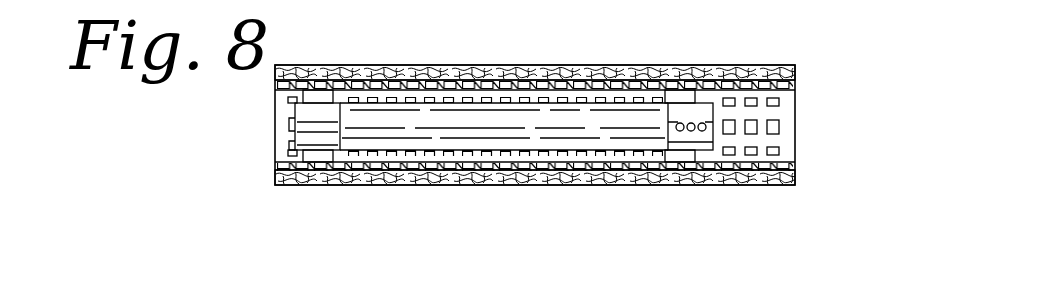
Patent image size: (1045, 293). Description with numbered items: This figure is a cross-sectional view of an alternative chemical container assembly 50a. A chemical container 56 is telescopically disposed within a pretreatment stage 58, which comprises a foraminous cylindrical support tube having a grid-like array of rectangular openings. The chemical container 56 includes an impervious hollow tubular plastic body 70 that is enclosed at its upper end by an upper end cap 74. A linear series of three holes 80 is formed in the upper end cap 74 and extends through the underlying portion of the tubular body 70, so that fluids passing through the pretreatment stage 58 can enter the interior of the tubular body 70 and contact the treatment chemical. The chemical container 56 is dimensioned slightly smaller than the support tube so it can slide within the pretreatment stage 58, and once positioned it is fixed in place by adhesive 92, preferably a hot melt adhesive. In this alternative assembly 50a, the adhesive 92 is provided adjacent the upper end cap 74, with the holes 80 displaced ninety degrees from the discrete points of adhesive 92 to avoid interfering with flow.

The chemical container assembly 50a is at (737, 64).
The chemical container 56 is at (415, 147).
The pretreatment stage 58 is at (493, 65).
The tubular body 70 is at (550, 100).
The upper end cap 74 is at (692, 100).
The holes 80 is at (684, 125).
The adhesive 92 is at (318, 95).